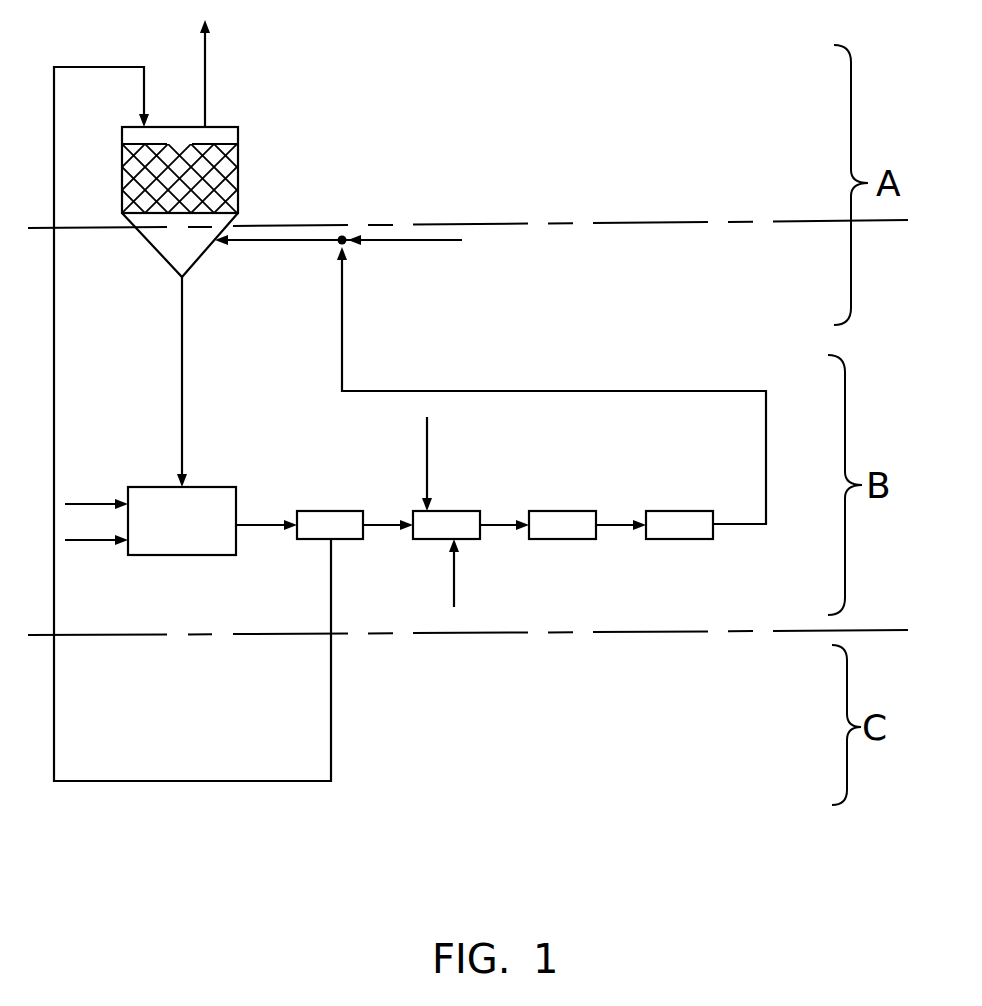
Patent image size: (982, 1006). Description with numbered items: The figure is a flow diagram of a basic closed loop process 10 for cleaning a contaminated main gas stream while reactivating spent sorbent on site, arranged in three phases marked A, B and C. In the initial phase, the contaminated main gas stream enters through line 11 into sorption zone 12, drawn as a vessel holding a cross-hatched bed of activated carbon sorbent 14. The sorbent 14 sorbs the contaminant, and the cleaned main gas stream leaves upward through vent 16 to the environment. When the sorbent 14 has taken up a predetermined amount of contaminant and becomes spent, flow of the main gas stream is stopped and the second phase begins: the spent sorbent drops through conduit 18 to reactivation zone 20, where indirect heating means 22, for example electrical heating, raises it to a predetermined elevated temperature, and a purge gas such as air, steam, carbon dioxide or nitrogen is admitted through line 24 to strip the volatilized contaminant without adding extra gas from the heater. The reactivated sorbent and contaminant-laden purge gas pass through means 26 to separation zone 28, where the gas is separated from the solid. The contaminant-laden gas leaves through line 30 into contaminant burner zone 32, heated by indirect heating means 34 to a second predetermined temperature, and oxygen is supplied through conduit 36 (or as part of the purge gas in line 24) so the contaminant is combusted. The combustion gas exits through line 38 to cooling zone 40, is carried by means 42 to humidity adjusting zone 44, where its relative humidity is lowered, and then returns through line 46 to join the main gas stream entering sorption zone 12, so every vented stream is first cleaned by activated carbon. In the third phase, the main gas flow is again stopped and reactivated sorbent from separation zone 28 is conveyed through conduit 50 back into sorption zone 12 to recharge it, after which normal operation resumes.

The process for cleaning a contaminated main gas stream 10 is at (627, 121).
The line 11 is at (405, 240).
The sorption zone 12 is at (222, 127).
The activated carbon sorbent 14 is at (237, 192).
The vent 16 is at (207, 73).
The conduit 18 is at (182, 408).
The reactivation zone 20 is at (208, 487).
The heating means 22 is at (89, 504).
The line 24 is at (89, 540).
The means 26 is at (247, 525).
The separation zone 28 is at (311, 511).
The line 30 is at (370, 525).
The contaminant burner zone 32 is at (460, 511).
The heating means 34 is at (454, 595).
The conduit 36 is at (427, 435).
The line 38 is at (493, 525).
The cooling zone 40 is at (567, 511).
The means 42 is at (611, 525).
The humidity adjusting zone 44 is at (679, 511).
The line 46 is at (738, 524).
The conduit 50 is at (331, 685).